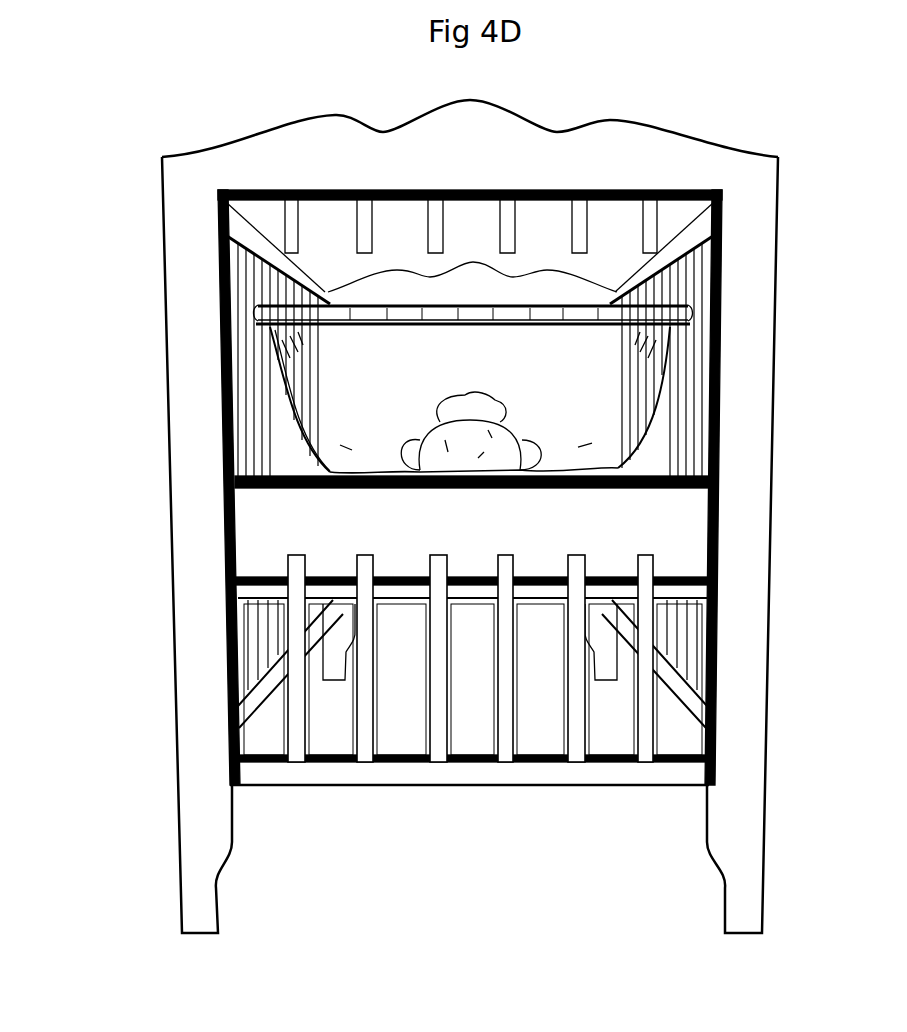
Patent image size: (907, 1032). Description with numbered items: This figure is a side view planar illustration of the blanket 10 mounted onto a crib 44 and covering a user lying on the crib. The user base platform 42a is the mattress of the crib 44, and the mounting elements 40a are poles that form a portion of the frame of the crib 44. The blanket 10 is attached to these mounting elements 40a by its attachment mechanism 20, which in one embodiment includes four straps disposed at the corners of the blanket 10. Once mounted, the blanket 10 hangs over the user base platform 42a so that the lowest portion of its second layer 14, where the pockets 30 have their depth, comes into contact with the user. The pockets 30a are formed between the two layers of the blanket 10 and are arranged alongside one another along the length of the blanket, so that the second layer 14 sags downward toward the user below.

The blanket 10 is at (308, 434).
The second layer 14 is at (647, 391).
The attachment mechanism 20 is at (693, 320).
The pockets 30 is at (376, 412).
The pockets 30a is at (606, 413).
The mounting elements 40a is at (683, 295).
The user base platform 42a is at (692, 535).
The crib 44 is at (748, 447).